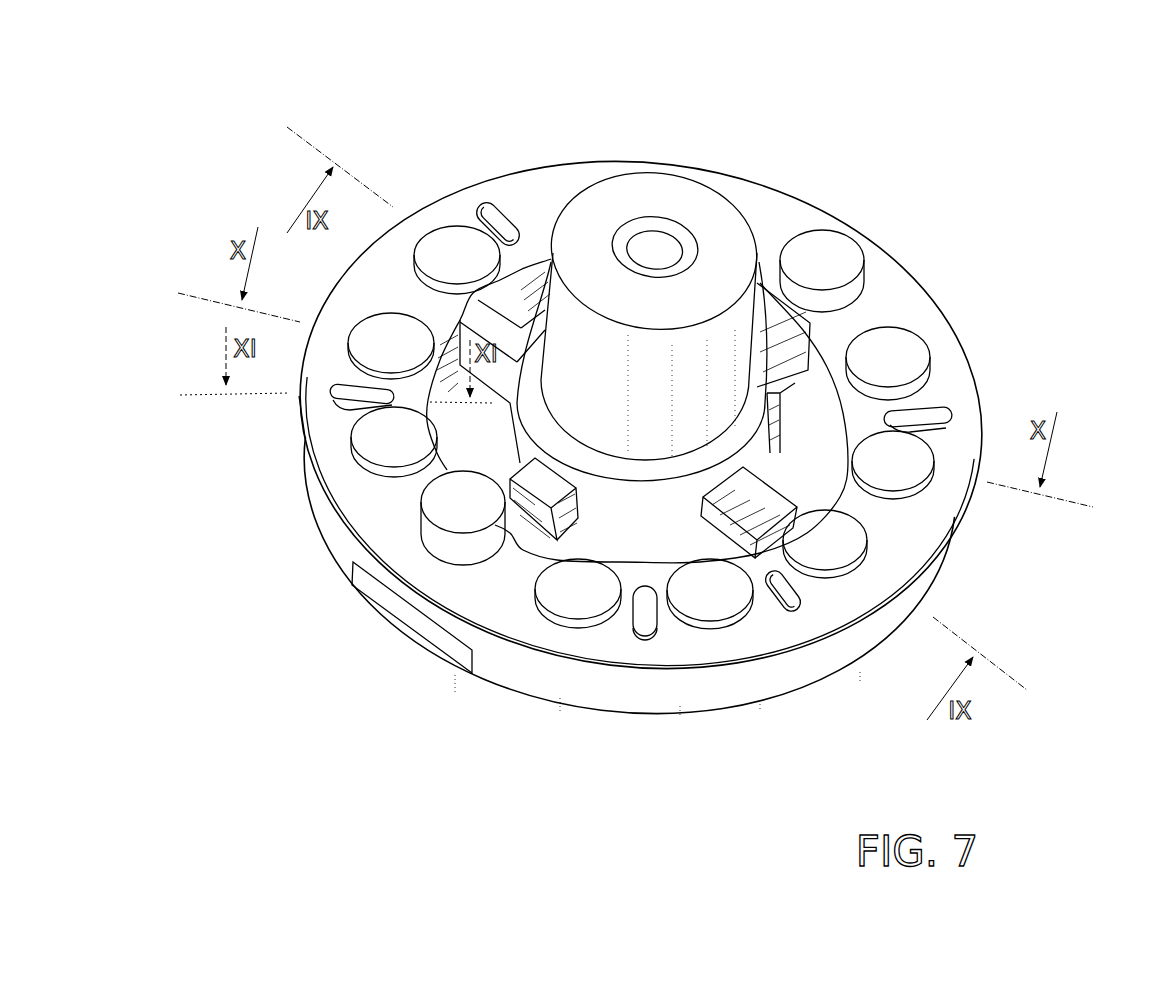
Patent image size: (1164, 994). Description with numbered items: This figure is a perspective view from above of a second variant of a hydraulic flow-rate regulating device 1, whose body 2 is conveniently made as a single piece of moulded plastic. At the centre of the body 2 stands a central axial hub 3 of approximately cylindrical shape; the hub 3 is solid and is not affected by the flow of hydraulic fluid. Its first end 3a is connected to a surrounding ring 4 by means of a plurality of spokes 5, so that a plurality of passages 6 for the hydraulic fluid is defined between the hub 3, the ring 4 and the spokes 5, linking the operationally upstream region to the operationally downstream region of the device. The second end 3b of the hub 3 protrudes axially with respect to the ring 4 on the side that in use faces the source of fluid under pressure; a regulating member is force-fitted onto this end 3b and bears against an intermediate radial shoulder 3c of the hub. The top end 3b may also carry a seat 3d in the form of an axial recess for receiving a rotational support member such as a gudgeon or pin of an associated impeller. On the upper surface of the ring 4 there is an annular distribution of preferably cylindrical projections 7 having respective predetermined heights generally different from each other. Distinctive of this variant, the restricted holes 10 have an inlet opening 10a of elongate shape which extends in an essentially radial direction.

The hydraulic flow-rate regulating device 1 is at (840, 193).
The body 2 is at (300, 498).
The central axial hub 3 is at (765, 303).
The first end of the hub 3a is at (525, 500).
The second end of the hub 3b is at (620, 200).
The intermediate radial shoulder 3c is at (548, 335).
The seat 3d is at (678, 212).
The ring 4 is at (778, 213).
The spokes 5 is at (458, 256).
The passages 6 is at (489, 454).
The projections 7 is at (392, 345).
The restricted holes 10 is at (962, 417).
The inlet opening 10a is at (913, 410).